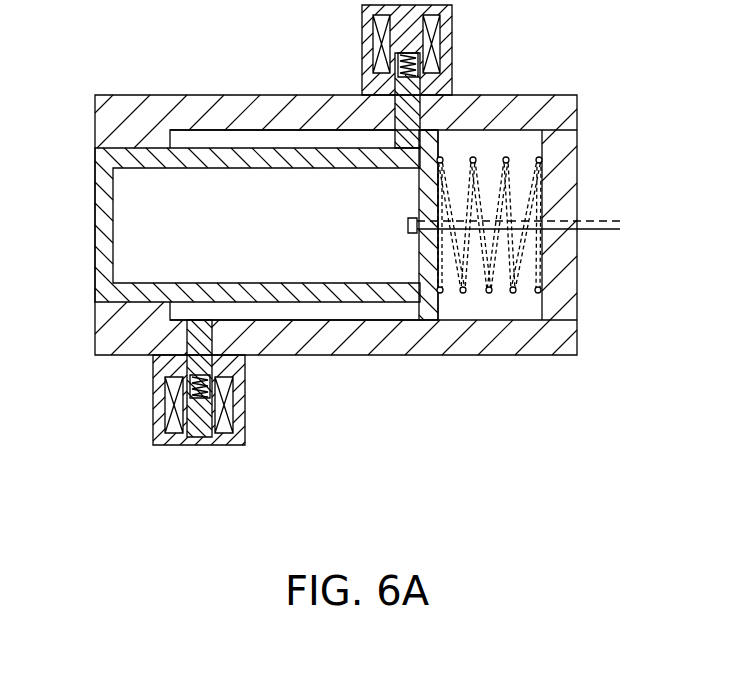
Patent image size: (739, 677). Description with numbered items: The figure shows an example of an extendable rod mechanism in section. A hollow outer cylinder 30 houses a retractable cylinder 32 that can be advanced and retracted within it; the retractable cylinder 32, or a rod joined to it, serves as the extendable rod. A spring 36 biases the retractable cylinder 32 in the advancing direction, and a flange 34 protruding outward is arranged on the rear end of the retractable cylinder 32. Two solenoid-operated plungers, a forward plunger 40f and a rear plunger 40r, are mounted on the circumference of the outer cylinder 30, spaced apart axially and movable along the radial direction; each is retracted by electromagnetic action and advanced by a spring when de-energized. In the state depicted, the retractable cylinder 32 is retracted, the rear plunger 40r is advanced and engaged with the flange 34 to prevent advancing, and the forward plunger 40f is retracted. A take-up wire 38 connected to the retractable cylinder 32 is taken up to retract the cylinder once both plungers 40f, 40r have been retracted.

The outer cylinder 30 is at (437, 357).
The retractable cylinder 32 is at (312, 304).
The flange 34 is at (415, 312).
The spring 36 is at (522, 270).
The take-up wire 38 is at (596, 220).
The rear plunger 40r is at (398, 112).
The forward plunger 40f is at (190, 343).